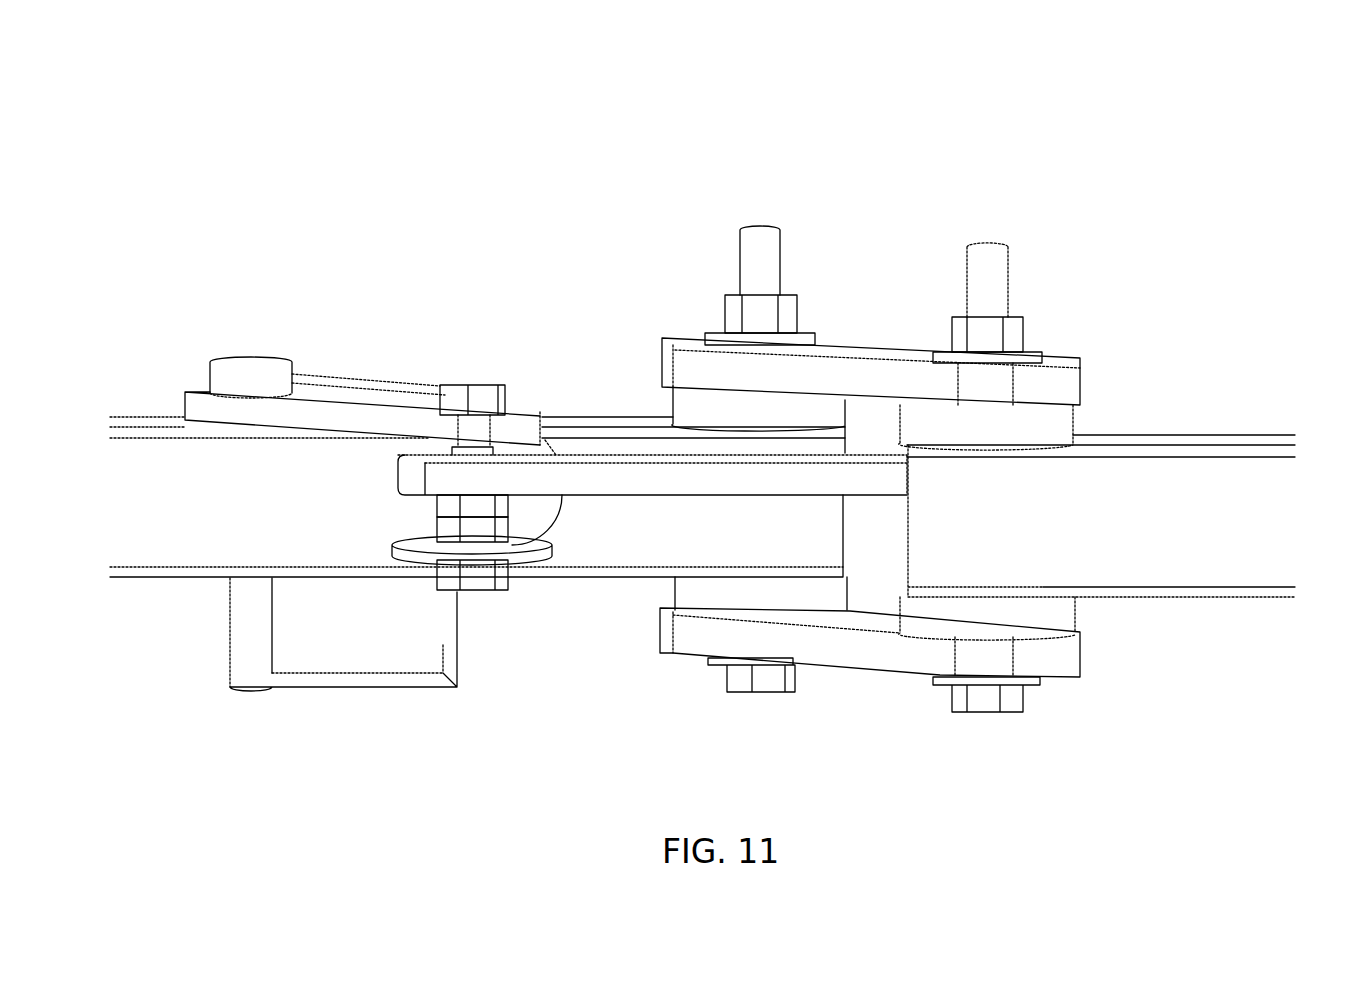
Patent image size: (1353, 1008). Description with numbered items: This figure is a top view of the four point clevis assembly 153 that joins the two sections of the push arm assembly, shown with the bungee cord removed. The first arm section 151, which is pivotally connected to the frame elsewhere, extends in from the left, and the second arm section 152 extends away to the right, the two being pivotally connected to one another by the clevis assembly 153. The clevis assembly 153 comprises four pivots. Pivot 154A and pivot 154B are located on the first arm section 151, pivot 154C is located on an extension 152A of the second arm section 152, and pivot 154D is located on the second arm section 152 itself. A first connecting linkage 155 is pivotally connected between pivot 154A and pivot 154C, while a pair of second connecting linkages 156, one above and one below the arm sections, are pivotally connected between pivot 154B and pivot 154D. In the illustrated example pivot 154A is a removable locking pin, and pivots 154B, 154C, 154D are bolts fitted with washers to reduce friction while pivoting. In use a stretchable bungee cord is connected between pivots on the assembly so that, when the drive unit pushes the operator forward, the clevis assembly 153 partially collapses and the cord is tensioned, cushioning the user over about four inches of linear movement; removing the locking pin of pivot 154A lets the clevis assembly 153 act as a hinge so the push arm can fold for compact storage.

The first arm section 151 is at (243, 540).
The second arm section 152 is at (1232, 495).
The extension 152A is at (613, 478).
The four point clevis assembly 153 is at (467, 153).
The pivot 154A is at (245, 360).
The pivot 154B is at (760, 240).
The pivot 154C is at (470, 388).
The pivot 154D is at (997, 258).
The first connecting linkage 155 is at (364, 420).
The second connecting linkage 156 is at (898, 378).